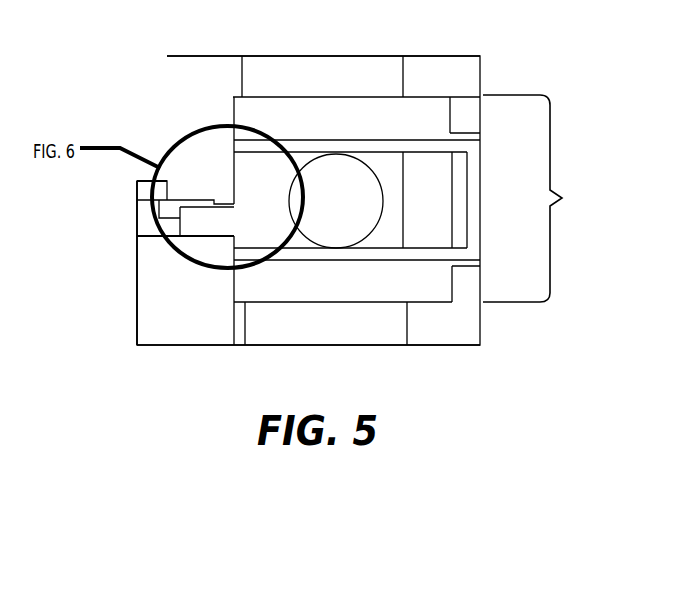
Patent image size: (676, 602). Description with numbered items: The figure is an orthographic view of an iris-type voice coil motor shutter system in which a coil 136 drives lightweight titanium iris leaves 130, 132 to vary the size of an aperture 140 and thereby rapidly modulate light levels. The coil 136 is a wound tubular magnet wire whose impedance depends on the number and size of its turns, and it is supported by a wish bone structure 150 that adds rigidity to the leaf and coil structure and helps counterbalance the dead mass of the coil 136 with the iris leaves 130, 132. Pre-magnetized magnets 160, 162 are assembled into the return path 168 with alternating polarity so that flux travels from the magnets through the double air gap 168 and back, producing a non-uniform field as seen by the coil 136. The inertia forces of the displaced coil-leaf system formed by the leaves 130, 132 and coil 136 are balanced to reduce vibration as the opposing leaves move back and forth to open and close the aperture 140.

The iris leaf 130 is at (442, 198).
The iris leaf 132 is at (263, 242).
The coil 136 is at (224, 200).
The aperture 140 is at (333, 225).
The wish bone structure 150 is at (197, 207).
The magnet 160 is at (332, 68).
The magnet 162 is at (392, 338).
The return path / air gap 168 is at (538, 198).